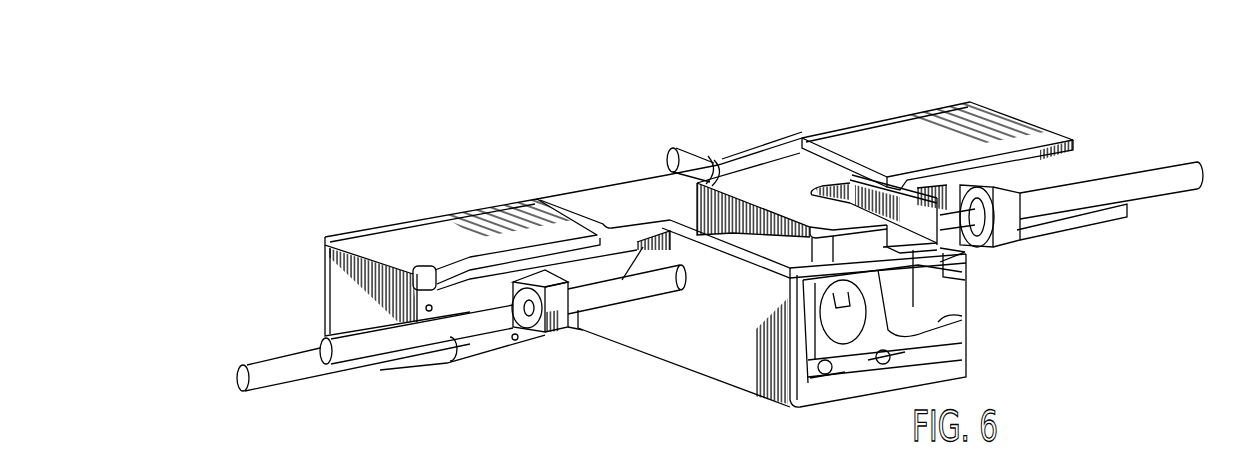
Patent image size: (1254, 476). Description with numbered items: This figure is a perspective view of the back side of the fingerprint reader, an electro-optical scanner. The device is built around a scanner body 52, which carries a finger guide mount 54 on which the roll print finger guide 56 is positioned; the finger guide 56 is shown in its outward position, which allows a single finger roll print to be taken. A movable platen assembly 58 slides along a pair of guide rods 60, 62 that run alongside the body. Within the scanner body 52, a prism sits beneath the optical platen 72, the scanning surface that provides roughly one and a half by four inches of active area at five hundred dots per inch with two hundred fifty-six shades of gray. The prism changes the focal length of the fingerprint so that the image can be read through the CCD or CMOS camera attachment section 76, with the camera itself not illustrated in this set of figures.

The scanner body 52 is at (700, 357).
The finger guide mount 54 is at (790, 202).
The roll print finger guide 56 is at (689, 153).
The movable platen assembly 58 is at (913, 127).
The guide rod 60 is at (284, 373).
The guide rod 62 is at (390, 340).
The optical platen 72 is at (628, 193).
The CCD or CMOS camera attachment section 76 is at (843, 325).